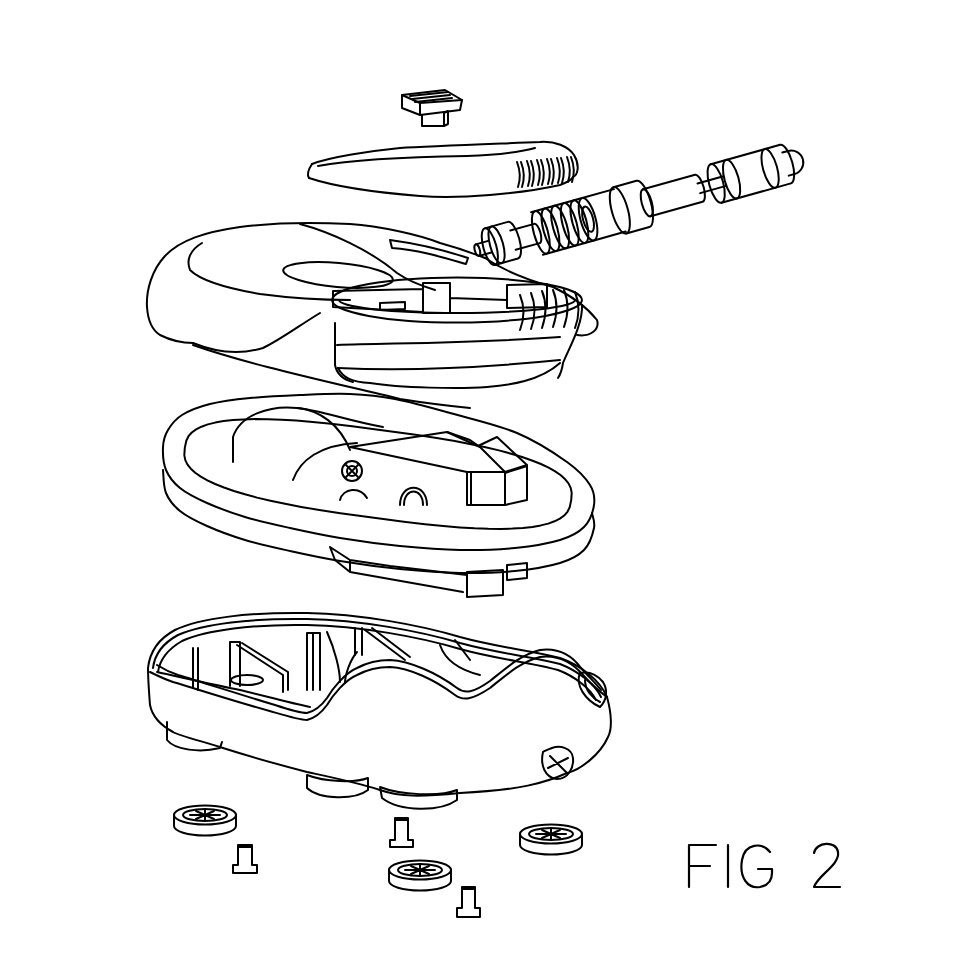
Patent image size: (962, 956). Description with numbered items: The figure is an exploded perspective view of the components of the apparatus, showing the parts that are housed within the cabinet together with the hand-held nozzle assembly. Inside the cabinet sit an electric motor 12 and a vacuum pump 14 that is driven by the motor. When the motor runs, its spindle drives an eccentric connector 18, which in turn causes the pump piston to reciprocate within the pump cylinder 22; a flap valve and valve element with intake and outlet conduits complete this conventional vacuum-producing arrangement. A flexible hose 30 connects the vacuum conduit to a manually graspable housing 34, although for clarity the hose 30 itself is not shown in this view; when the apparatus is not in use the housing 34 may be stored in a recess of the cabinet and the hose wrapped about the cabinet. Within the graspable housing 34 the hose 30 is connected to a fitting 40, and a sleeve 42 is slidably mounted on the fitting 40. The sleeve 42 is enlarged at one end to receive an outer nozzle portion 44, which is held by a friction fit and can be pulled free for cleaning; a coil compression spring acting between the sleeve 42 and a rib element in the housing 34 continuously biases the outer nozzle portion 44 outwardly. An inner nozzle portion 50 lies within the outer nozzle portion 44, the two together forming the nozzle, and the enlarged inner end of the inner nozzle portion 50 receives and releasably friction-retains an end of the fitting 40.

The electric motor 12 is at (263, 440).
The vacuum pump 14 is at (447, 494).
The eccentric connector 18 is at (352, 490).
The pump cylinder 22 is at (450, 508).
The flexible hose 30 is at (197, 467).
The manually graspable housing 34 is at (523, 147).
The fitting 40 is at (544, 249).
The sleeve 42 is at (642, 226).
The outer nozzle portion 44 is at (772, 165).
The inner nozzle portion 50 is at (680, 180).